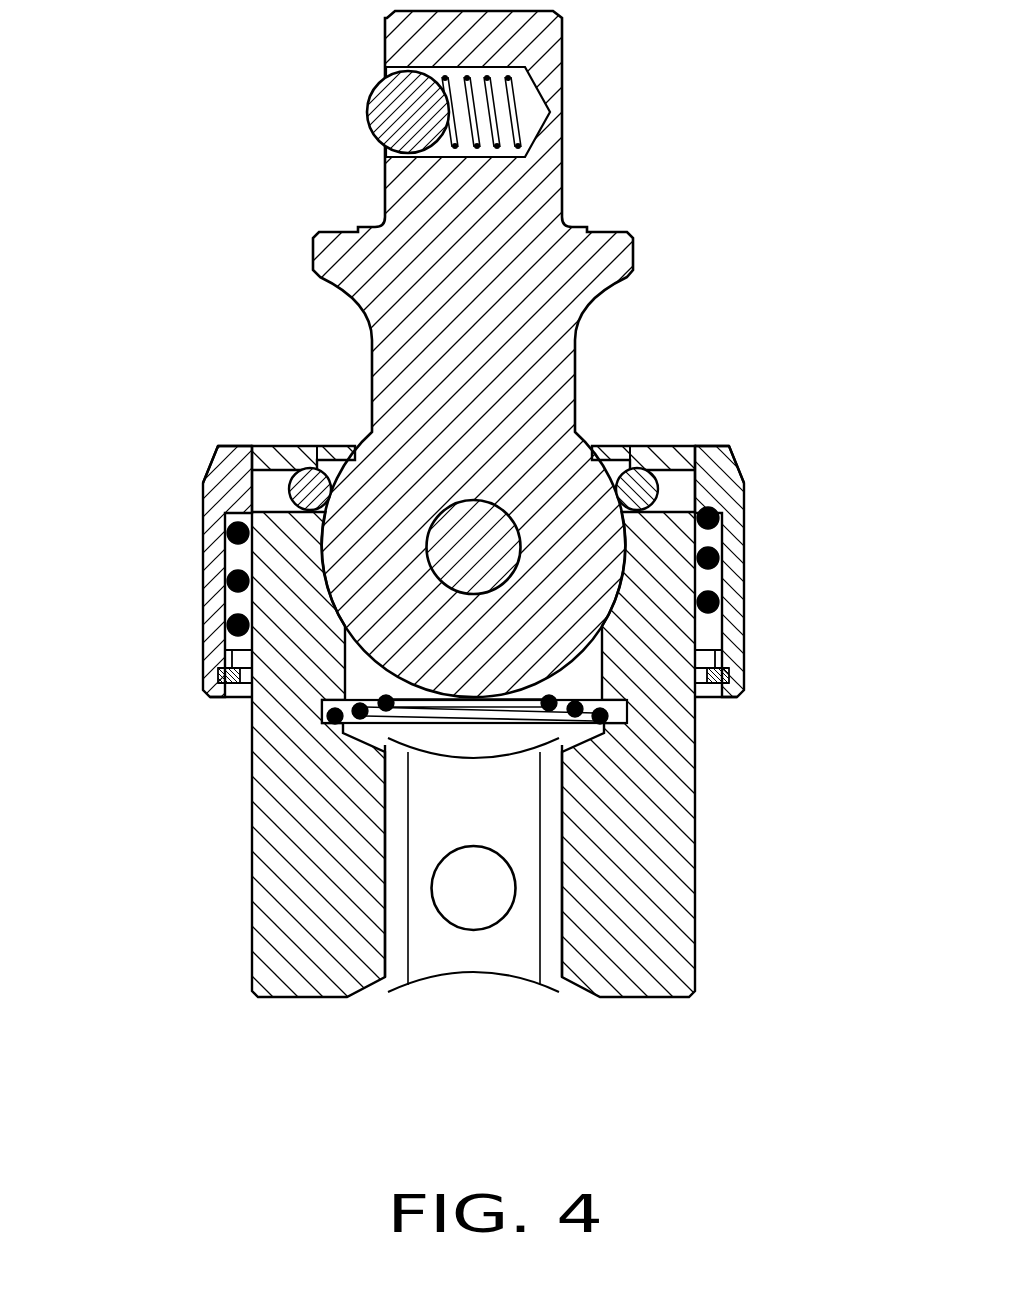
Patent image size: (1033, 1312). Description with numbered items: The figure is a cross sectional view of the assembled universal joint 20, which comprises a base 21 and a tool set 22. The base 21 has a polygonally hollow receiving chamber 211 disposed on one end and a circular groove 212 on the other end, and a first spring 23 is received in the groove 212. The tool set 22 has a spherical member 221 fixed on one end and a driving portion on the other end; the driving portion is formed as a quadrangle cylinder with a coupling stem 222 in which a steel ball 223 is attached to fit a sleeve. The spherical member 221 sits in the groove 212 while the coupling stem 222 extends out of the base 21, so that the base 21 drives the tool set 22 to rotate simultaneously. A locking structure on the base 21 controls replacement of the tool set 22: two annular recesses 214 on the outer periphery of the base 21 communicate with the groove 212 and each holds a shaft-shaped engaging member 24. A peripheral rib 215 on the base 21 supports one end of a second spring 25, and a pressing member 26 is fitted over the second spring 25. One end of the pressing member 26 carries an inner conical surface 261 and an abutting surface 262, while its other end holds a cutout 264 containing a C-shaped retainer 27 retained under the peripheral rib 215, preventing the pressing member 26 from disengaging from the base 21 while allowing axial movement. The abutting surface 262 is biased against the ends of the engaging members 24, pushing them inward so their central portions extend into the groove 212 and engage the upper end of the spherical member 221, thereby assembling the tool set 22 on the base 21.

The universal joint 20 is at (208, 242).
The base 21 is at (663, 827).
The polygonally hollow receiving chamber 211 is at (500, 962).
The circular groove 212 is at (613, 463).
The annular recess 214 is at (683, 493).
The peripheral rib 215 is at (237, 642).
The tool set 22 is at (543, 349).
The spherical member 221 is at (590, 548).
The coupling stem 222 is at (562, 50).
The steel ball 223 is at (392, 103).
The first spring 23 is at (627, 715).
The engaging member 24 is at (660, 466).
The second spring 25 is at (230, 574).
The pressing member 26 is at (208, 520).
The inner conical surface 261 is at (242, 448).
The abutting surface 262 is at (238, 487).
The cutout 264 is at (215, 660).
The C-shaped retainer 27 is at (230, 700).